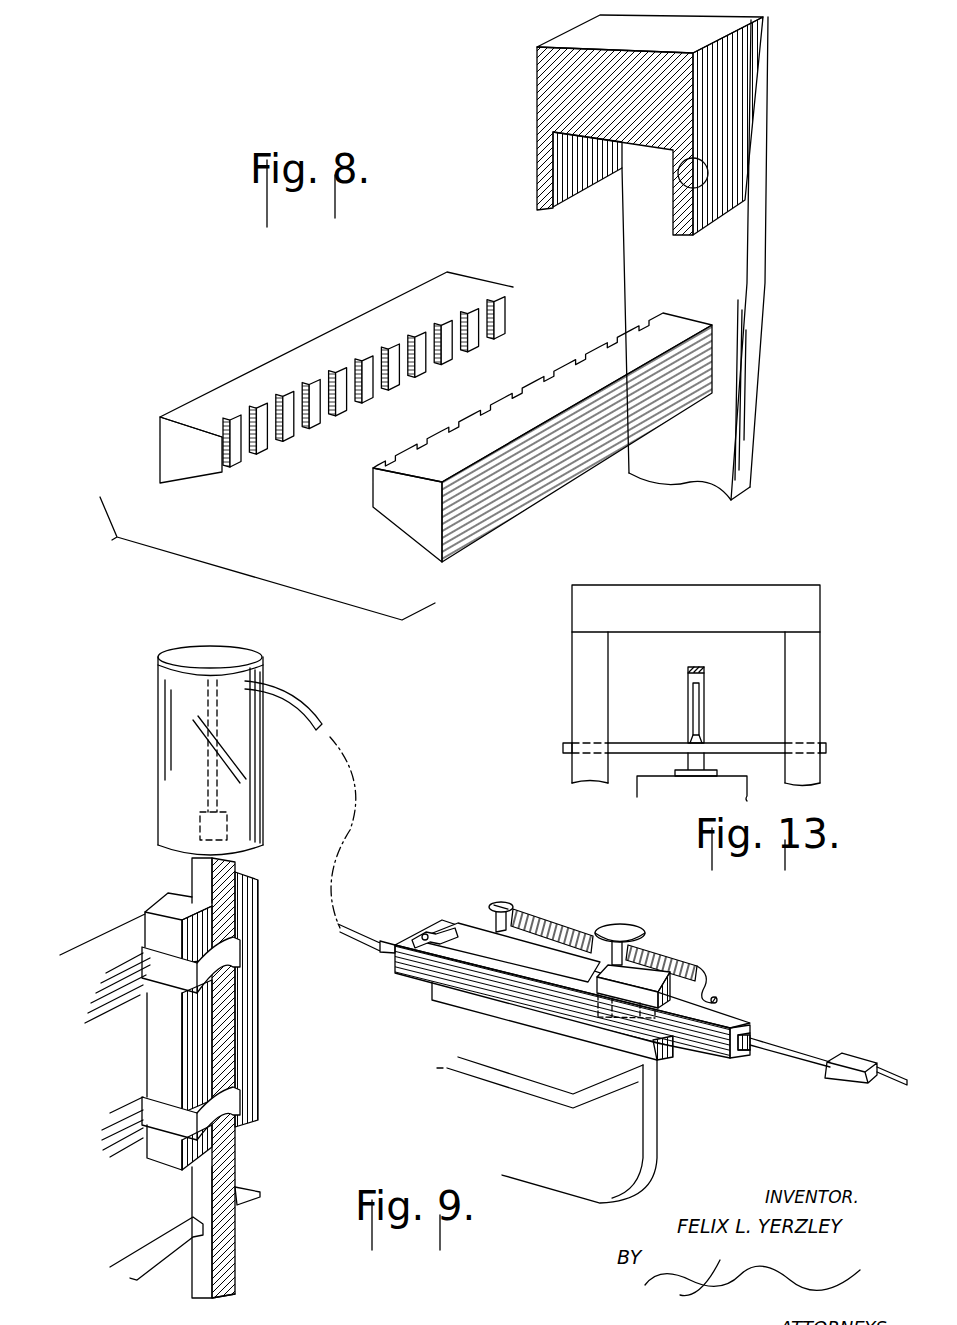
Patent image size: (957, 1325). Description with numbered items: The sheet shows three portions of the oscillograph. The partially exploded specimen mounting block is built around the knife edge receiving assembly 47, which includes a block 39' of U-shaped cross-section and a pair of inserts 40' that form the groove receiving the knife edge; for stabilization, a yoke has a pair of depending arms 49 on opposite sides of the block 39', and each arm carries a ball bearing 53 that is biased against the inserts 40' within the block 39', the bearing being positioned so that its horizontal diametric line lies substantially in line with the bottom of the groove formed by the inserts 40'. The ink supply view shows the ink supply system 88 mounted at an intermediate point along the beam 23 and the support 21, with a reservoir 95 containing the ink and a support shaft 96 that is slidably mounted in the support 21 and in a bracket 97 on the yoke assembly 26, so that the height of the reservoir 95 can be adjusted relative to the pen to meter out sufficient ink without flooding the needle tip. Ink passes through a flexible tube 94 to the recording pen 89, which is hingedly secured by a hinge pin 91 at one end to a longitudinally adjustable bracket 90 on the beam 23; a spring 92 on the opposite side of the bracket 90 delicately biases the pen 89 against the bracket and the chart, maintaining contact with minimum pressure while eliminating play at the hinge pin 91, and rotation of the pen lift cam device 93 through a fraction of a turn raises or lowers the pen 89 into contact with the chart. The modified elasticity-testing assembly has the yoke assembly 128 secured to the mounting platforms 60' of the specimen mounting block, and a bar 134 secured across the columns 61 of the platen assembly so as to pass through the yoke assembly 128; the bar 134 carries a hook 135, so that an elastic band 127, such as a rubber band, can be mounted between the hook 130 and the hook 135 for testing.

In FIG. 8, the knife edge receiving assembly 47 is at (554, 27).
In FIG. 8, the block 39' is at (586, 141).
In FIG. 8, the ball bearing 53 is at (713, 158).
In FIG. 8, the depending arms 49 is at (757, 253).
In FIG. 8, the inserts 40' is at (406, 446).
In FIG. 13, the columns 61 is at (577, 650).
In FIG. 13, the yoke assembly 128 is at (685, 693).
In FIG. 13, the elastic band 127 is at (700, 697).
In FIG. 13, the hook 130 is at (688, 680).
In FIG. 13, the hook 135 is at (703, 737).
In FIG. 13, the bar 134 is at (778, 755).
In FIG. 13, the mounting platforms 60' is at (689, 756).
In FIG. 9, the ink supply system 88 is at (254, 799).
In FIG. 9, the reservoir 95 is at (167, 728).
In FIG. 9, the flexible tube 94 is at (320, 723).
In FIG. 9, the yoke assembly 26 is at (125, 863).
In FIG. 9, the support shaft 96 is at (232, 870).
In FIG. 9, the bracket 97 is at (250, 968).
In FIG. 9, the support 21 is at (257, 1192).
In FIG. 9, the bracket 90 is at (519, 1013).
In FIG. 9, the hinge pin 91 is at (427, 933).
In FIG. 9, the pen lift cam device 93 is at (623, 925).
In FIG. 9, the spring 92 is at (683, 961).
In FIG. 9, the recording pen 89 is at (855, 1062).
In FIG. 9, the beam 23 is at (655, 1113).